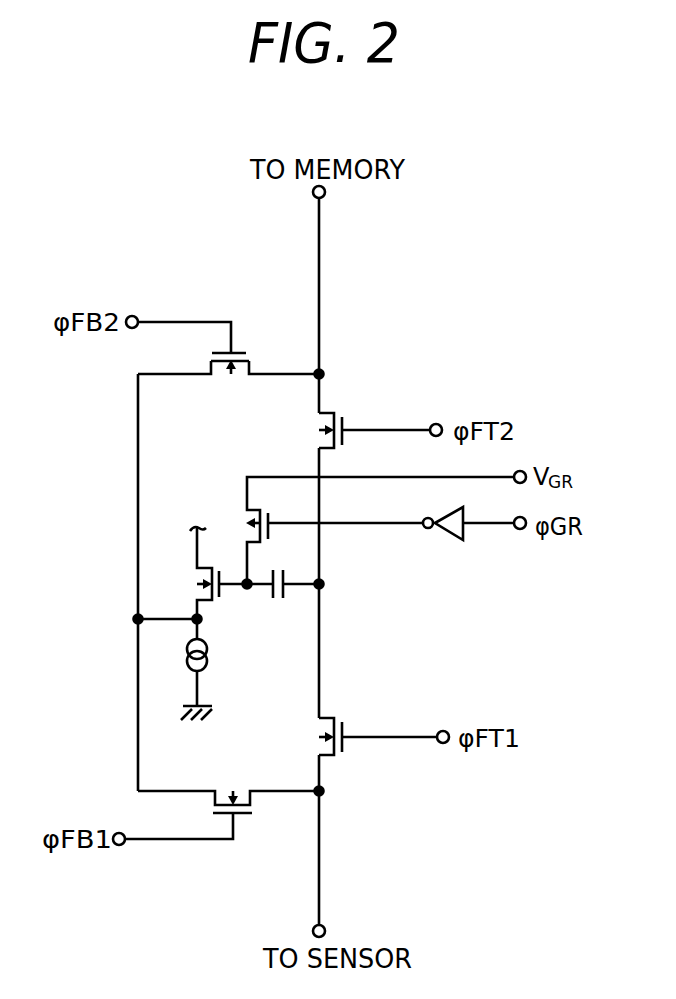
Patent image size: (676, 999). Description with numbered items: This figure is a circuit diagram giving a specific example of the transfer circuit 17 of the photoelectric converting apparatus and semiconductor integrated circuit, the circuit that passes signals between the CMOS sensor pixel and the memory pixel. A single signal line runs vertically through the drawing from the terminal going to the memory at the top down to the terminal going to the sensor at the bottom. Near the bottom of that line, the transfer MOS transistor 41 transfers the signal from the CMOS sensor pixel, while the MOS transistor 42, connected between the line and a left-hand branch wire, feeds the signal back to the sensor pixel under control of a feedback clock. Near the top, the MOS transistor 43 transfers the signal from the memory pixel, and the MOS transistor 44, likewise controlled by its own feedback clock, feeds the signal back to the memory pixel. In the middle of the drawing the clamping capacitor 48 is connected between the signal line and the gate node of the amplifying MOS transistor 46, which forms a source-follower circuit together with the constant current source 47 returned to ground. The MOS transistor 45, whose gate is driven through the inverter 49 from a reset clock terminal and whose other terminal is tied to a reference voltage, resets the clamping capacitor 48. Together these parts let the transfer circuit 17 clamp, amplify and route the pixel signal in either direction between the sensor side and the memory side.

The transfer circuit 17 is at (319, 271).
The transfer MOS transistor 41 is at (340, 758).
The MOS transistor 42 is at (258, 807).
The MOS transistor 43 is at (336, 410).
The MOS transistor 44 is at (250, 351).
The MOS transistor 45 is at (242, 518).
The amplifying MOS transistor 46 is at (194, 568).
The constant current source 47 is at (209, 655).
The clamping capacitor 48 is at (277, 601).
The inverter 49 is at (445, 541).